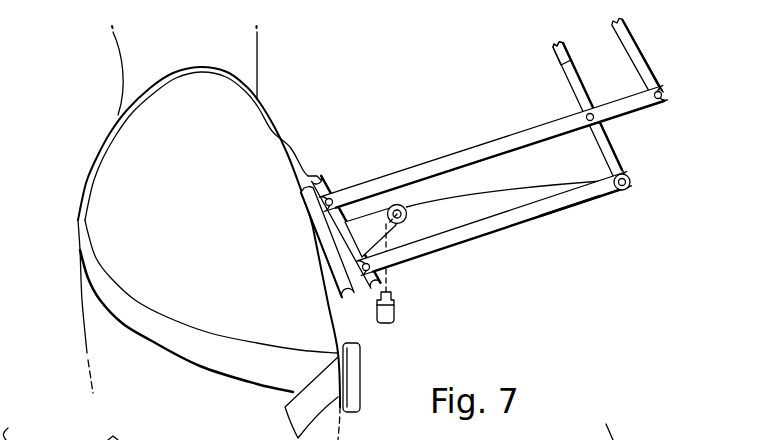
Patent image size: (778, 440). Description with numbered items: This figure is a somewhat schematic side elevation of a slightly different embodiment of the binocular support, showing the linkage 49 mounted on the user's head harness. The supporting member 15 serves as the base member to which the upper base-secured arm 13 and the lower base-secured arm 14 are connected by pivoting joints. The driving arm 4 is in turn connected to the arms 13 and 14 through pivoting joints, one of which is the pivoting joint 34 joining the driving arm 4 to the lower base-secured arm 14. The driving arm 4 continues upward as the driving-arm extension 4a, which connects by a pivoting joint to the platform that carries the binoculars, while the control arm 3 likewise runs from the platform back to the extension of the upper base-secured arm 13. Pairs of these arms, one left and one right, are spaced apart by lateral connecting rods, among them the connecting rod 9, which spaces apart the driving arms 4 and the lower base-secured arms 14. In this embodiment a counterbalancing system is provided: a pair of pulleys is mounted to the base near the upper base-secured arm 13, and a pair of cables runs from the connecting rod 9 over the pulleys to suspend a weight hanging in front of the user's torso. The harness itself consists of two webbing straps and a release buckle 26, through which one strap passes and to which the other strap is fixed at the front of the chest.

The control arm 3 is at (638, 62).
The driving arm 4 is at (608, 152).
The driving-arm extension 4a is at (567, 77).
The connecting rod 9 is at (604, 189).
The upper base-secured arm 13 is at (385, 180).
The lower base-secured arm 14 is at (498, 228).
The supporting member 15 is at (343, 228).
The release buckle 26 is at (360, 377).
The pivoting joint 34 is at (630, 181).
The linkage 49 is at (565, 218).